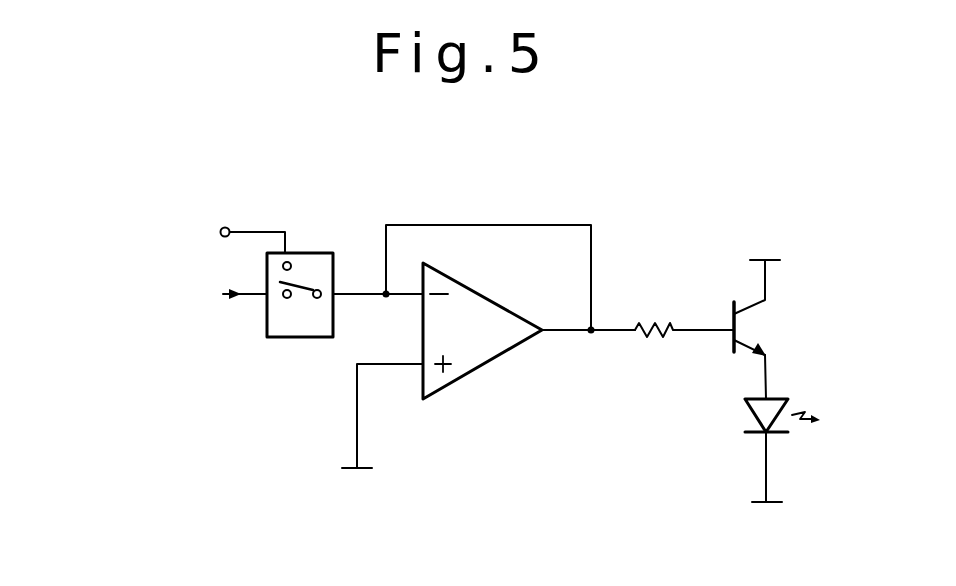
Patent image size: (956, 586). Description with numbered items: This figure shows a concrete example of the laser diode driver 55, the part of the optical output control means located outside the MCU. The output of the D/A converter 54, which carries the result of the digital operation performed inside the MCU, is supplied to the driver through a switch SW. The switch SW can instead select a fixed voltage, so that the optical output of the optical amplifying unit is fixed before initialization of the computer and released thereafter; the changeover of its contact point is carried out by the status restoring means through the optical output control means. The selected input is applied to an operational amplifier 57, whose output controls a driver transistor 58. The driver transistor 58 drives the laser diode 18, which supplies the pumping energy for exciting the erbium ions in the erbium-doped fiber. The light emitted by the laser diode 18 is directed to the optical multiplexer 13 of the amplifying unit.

The laser diode driver 55 is at (488, 183).
The operational amplifier 57 is at (493, 363).
The driver transistor 58 is at (767, 329).
The laser diode 18 is at (750, 410).
The D/A converter 54 is at (177, 314).
The optical multiplexer (WDM) 13 is at (824, 416).
The switch SW is at (292, 337).